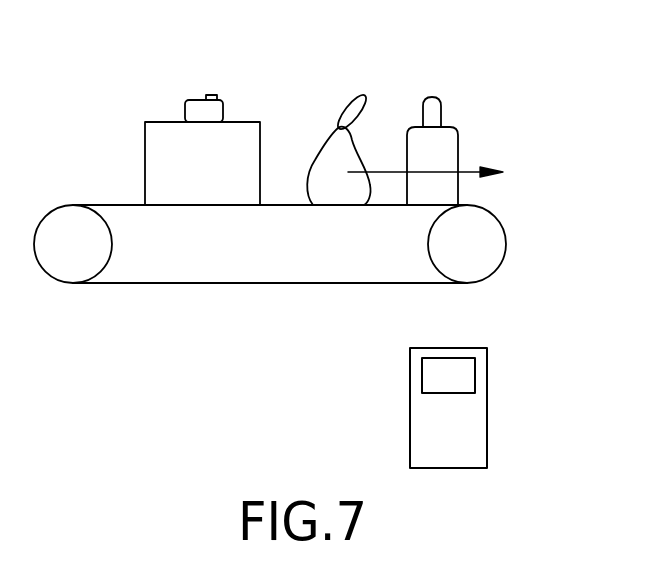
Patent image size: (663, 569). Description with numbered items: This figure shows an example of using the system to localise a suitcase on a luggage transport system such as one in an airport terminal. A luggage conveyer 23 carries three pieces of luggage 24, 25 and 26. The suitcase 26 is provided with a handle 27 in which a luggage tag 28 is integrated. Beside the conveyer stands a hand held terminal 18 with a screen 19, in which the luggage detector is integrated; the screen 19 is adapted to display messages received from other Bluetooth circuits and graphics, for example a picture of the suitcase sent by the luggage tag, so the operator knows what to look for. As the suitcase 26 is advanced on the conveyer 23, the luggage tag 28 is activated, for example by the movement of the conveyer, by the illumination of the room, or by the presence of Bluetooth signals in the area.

The hand held terminal 18 is at (475, 445).
The screen 19 is at (463, 374).
The luggage conveyer 23 is at (142, 260).
The piece of luggage 24 is at (332, 148).
The piece of luggage 25 is at (448, 143).
The suitcase 26 is at (162, 142).
The handle 27 is at (208, 98).
The luggage tag 28 is at (210, 97).